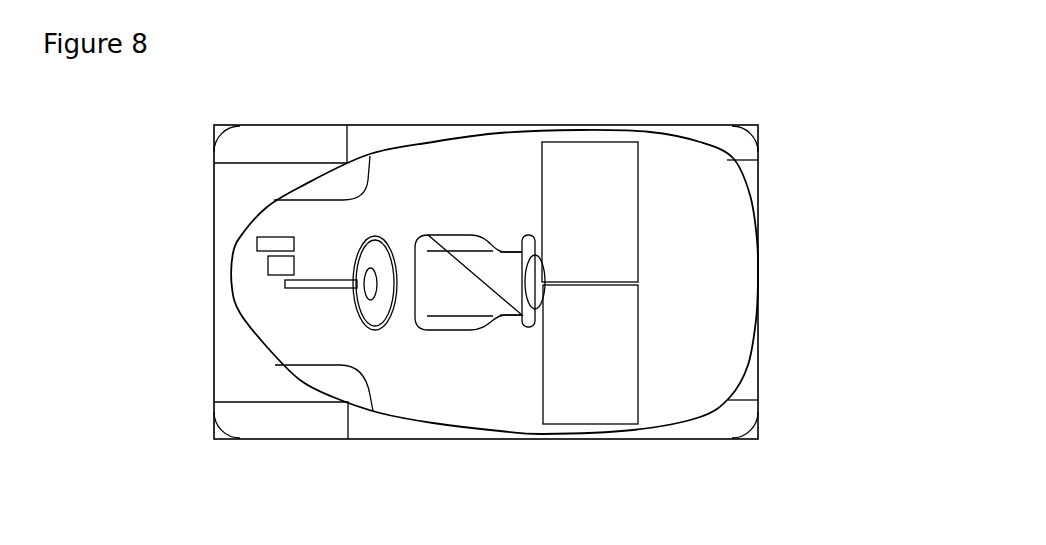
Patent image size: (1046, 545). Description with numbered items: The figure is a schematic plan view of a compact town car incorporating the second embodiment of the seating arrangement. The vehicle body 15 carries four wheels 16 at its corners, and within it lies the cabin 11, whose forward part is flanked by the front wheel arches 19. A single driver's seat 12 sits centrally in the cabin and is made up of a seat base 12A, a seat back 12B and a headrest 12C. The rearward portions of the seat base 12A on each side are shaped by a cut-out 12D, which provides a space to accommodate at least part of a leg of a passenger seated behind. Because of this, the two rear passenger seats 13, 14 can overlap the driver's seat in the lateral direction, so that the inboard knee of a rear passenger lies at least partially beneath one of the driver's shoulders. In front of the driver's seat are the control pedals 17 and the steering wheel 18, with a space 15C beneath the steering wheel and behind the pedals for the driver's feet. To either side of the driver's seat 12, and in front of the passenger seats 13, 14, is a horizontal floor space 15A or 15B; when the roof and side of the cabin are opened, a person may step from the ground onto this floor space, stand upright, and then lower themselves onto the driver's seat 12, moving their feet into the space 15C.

The cabin 11 is at (382, 415).
The driver's seat 12 is at (454, 245).
The seat base 12A is at (437, 333).
The seat back 12B is at (529, 335).
The headrest 12C is at (536, 281).
The cut-out 12D is at (508, 237).
The rear passenger seat 13 is at (601, 172).
The rear passenger seat 14 is at (583, 405).
The body 15 is at (762, 313).
The floor space 15A is at (477, 372).
The floor space 15B is at (465, 185).
The space beneath the steering wheel 15C is at (292, 292).
The wheels 16 is at (288, 415).
The control pedals 17 is at (262, 267).
The steering wheel 18 is at (370, 237).
The front wheel arches 19 is at (353, 187).